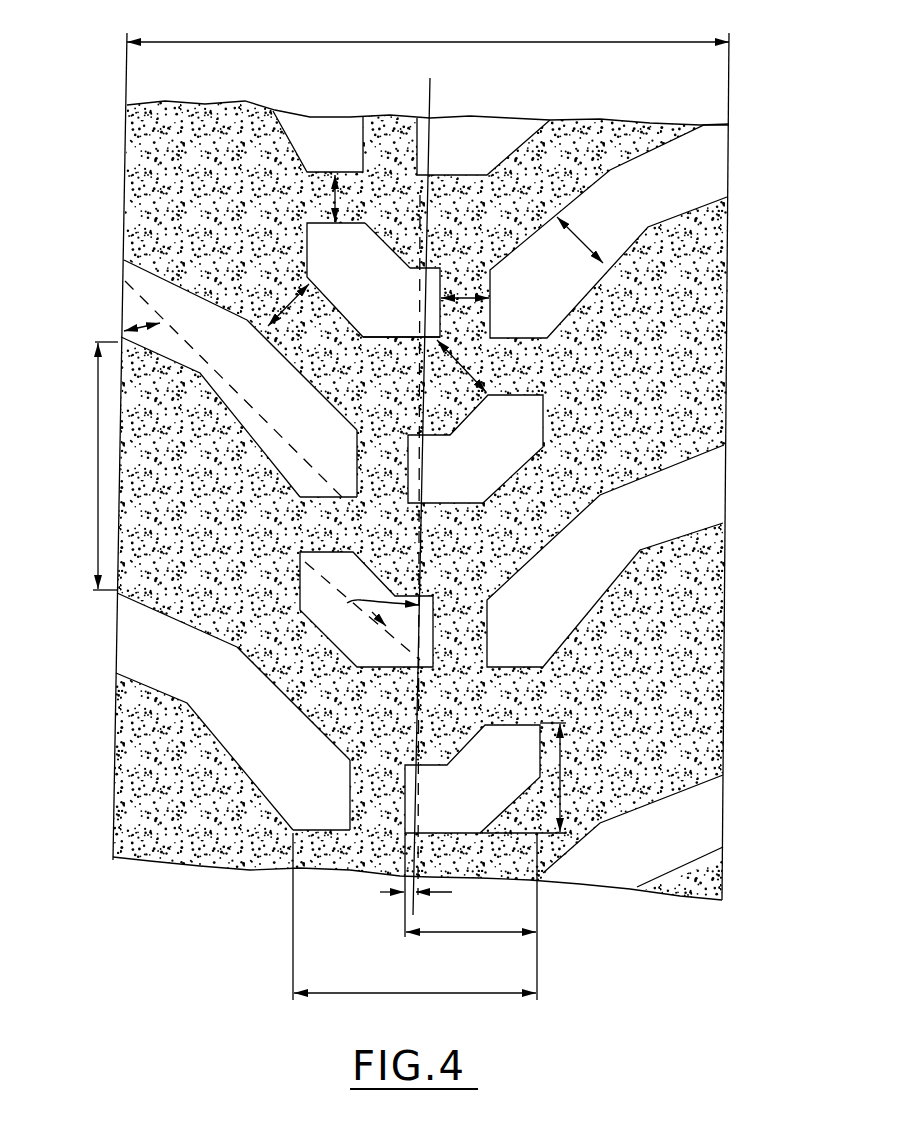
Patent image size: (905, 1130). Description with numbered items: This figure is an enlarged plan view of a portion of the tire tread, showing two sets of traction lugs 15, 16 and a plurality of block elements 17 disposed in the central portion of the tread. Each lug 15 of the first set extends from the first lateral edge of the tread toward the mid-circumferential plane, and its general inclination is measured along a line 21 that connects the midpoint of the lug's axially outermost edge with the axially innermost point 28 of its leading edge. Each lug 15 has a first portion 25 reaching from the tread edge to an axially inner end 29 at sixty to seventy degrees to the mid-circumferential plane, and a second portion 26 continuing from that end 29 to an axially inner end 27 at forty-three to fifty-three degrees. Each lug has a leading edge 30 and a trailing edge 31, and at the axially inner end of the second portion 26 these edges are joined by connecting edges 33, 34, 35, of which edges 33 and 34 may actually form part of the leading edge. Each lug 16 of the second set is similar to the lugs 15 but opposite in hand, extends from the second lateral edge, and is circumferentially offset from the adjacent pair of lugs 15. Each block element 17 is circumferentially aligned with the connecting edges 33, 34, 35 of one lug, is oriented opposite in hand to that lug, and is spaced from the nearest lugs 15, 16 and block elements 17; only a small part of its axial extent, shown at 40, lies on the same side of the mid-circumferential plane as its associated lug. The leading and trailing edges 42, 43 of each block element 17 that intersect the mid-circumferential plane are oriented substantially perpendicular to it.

The traction lug of the first set 15 is at (124, 282).
The traction lug of the second set 16 is at (720, 482).
The block element 17 is at (307, 240).
The line of general inclination 21 is at (223, 378).
The first portion of traction lug 25 is at (157, 289).
The second portion of traction lug 26 is at (312, 382).
The axially inner end of traction lug 27 is at (356, 433).
The axially innermost point of leading edge 28 is at (357, 501).
The axially inner end of first portion 29 is at (238, 308).
The leading edge of traction lug 30 is at (233, 757).
The trailing edge of traction lug 31 is at (322, 723).
The connecting edge 33 is at (293, 817).
The connecting edge 34 is at (300, 832).
The connecting edge 35 is at (353, 790).
The block element axial extent on lug side of mid-circumferential plane 40 is at (380, 892).
The leading edge of block element 42 is at (402, 262).
The trailing edge of block element 43 is at (400, 339).